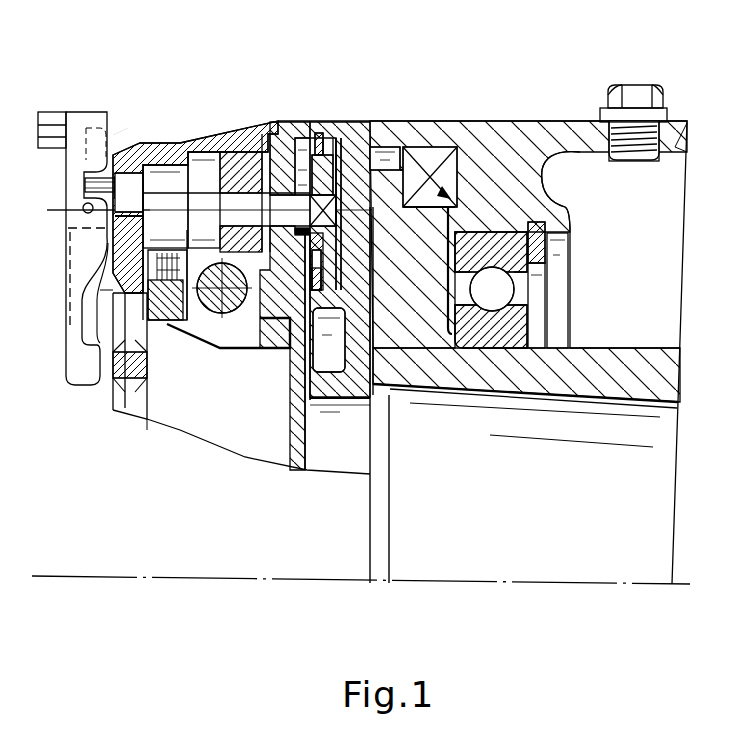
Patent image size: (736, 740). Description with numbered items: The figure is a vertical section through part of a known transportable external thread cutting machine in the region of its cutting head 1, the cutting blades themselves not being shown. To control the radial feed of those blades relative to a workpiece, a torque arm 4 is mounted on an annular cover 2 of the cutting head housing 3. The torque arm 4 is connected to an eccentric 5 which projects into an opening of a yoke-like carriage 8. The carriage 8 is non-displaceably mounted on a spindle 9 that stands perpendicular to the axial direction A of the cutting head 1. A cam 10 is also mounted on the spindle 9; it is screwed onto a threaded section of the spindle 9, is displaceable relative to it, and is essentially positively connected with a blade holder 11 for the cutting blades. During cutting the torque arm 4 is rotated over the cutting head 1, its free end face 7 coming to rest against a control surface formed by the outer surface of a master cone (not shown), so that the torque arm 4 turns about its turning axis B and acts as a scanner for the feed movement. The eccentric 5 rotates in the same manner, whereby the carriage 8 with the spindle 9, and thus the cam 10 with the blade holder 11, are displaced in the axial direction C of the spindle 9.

The cutting head 1 is at (119, 116).
The annular cover 2 is at (128, 148).
The cutting head housing 3 is at (291, 106).
The torque arm 4 is at (72, 186).
The eccentric 5 is at (204, 200).
The free end face 7 is at (79, 112).
The yoke-like carriage 8 is at (249, 152).
The spindle 9 is at (240, 302).
The cam 10 is at (194, 324).
The blade holder 11 is at (178, 415).
The axial direction A is at (100, 576).
The turning axis B is at (63, 211).
The axial direction of spindle C is at (222, 290).